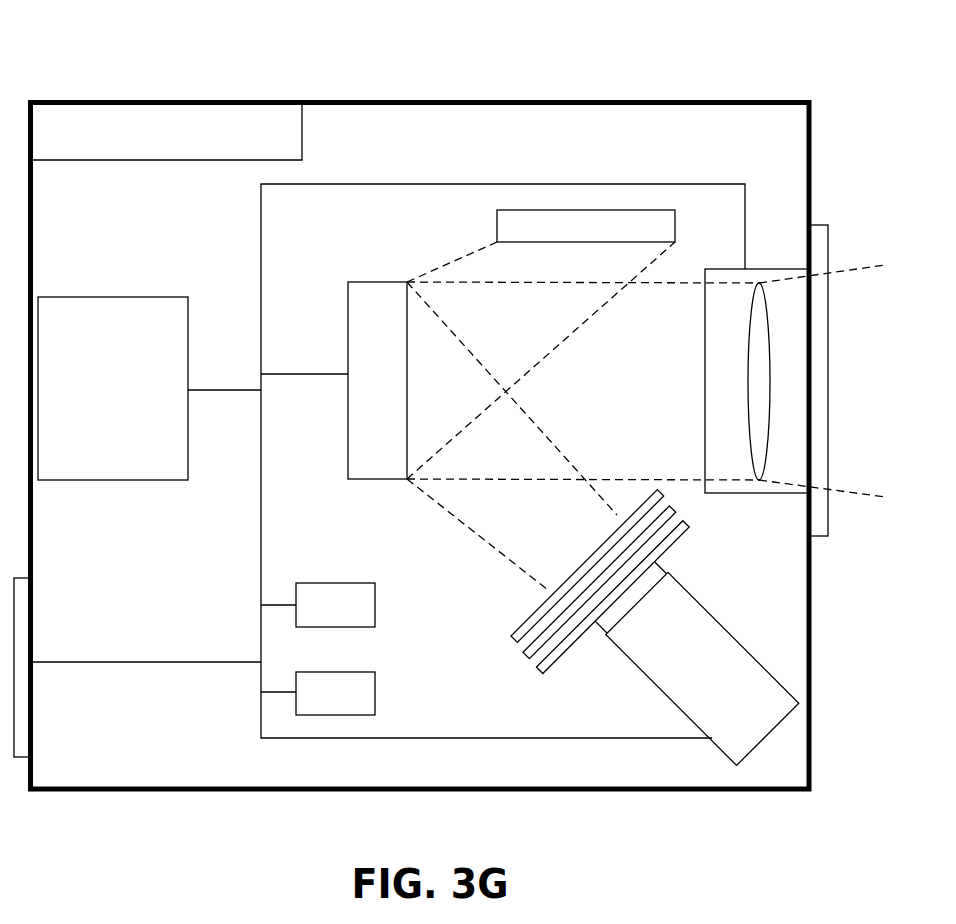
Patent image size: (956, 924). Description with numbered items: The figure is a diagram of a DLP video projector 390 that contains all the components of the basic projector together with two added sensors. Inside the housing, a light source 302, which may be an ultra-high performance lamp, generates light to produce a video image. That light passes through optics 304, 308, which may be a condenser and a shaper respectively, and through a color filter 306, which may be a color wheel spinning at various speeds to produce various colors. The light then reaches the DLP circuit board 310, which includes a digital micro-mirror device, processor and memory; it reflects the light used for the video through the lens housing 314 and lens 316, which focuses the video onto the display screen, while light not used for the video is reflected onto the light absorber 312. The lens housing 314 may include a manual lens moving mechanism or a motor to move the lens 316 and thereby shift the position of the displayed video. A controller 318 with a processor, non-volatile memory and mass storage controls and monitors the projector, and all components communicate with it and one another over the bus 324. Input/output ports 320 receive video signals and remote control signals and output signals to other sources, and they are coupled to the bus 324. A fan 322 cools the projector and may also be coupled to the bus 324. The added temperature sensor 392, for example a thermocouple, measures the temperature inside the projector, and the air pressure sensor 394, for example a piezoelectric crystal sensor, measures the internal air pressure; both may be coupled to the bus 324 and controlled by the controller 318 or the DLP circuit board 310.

The DLP video projector 390 is at (440, 35).
The fan 322 is at (117, 100).
The bus 324 is at (230, 578).
The input/output ports 320 is at (38, 614).
The controller 318 is at (125, 400).
The DLP circuit board 310 is at (394, 400).
The light absorber 312 is at (497, 222).
The lens housing 314 is at (705, 343).
The lens 316 is at (748, 407).
The optics 308 is at (510, 636).
The color filter 306 is at (530, 662).
The optics 304 is at (540, 672).
The light source 302 is at (717, 681).
The temperature sensor 392 is at (352, 614).
The air pressure sensor 394 is at (352, 703).